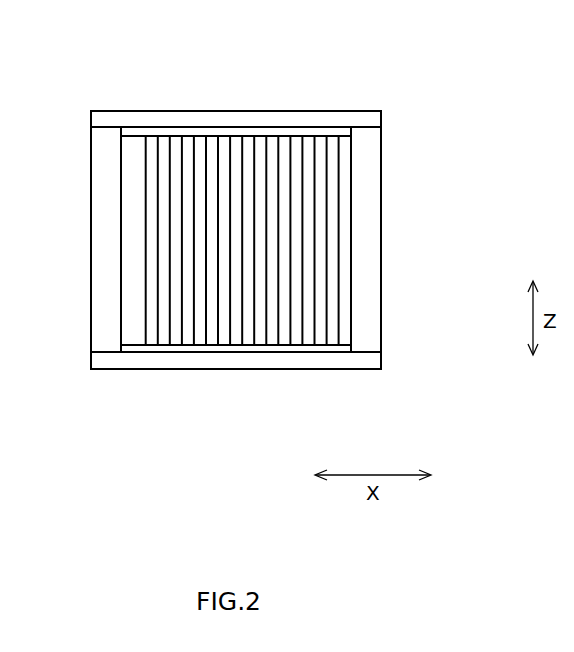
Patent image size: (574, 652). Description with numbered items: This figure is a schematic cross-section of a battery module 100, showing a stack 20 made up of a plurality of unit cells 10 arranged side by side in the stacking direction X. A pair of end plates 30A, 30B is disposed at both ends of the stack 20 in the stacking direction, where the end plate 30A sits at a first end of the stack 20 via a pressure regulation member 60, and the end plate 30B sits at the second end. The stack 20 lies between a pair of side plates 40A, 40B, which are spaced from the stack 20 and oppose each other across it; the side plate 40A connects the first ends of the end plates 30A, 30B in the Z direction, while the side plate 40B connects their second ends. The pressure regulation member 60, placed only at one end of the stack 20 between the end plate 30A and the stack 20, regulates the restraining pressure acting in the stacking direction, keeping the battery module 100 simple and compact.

The battery module 100 is at (464, 40).
The unit cell 10 is at (286, 342).
The stack 20 is at (190, 134).
The end plate 30A is at (91, 275).
The end plate 30B is at (373, 289).
The side plate 40A is at (297, 111).
The side plate 40B is at (330, 369).
The pressure regulation member 60 is at (134, 347).